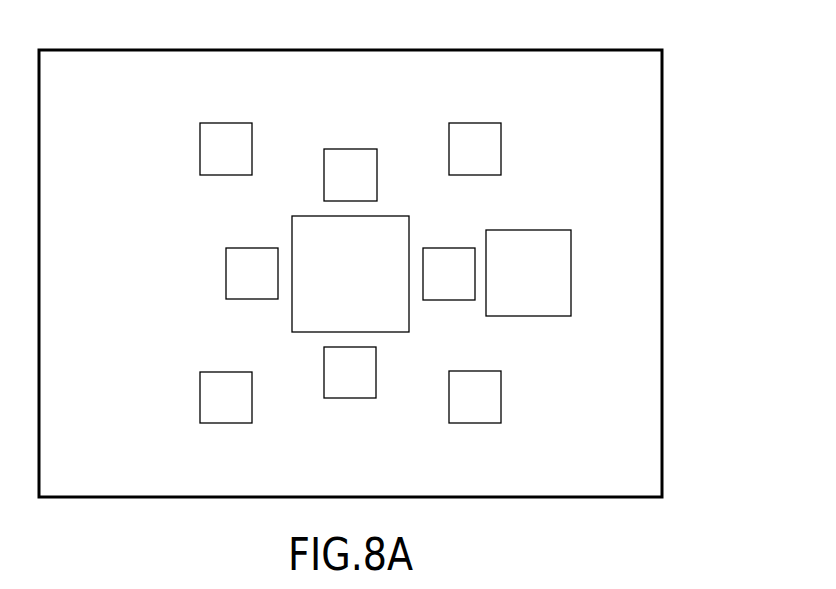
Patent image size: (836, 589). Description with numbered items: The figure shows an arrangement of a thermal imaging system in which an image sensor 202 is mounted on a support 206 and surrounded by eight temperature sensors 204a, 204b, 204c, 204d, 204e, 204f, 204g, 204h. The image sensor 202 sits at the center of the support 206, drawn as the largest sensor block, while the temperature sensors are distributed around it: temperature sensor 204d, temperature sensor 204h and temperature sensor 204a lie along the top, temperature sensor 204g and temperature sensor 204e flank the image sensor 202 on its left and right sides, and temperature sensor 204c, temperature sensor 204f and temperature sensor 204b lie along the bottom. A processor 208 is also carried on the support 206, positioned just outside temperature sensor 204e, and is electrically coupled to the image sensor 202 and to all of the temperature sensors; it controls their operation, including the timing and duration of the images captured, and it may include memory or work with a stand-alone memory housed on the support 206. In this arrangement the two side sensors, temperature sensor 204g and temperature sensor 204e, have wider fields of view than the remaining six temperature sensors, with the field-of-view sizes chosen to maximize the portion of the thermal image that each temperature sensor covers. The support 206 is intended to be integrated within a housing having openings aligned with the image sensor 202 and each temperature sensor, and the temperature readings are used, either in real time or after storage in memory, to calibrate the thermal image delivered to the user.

The image sensor 202 is at (292, 230).
The temperature sensor 204a is at (475, 123).
The temperature sensor 204b is at (478, 423).
The temperature sensor 204c is at (226, 423).
The temperature sensor 204d is at (225, 123).
The temperature sensor 204e is at (450, 248).
The temperature sensor 204f is at (348, 398).
The temperature sensor 204g is at (226, 273).
The temperature sensor 204h is at (350, 149).
The support 206 is at (662, 117).
The processor 208 is at (521, 316).